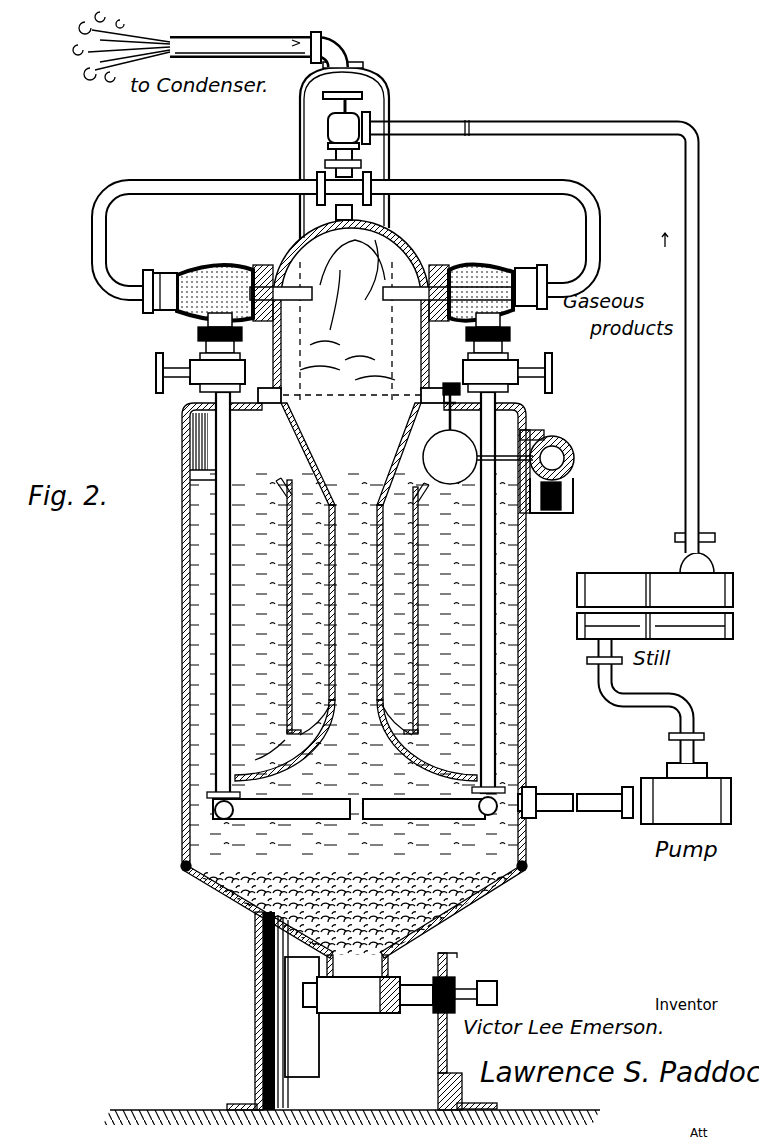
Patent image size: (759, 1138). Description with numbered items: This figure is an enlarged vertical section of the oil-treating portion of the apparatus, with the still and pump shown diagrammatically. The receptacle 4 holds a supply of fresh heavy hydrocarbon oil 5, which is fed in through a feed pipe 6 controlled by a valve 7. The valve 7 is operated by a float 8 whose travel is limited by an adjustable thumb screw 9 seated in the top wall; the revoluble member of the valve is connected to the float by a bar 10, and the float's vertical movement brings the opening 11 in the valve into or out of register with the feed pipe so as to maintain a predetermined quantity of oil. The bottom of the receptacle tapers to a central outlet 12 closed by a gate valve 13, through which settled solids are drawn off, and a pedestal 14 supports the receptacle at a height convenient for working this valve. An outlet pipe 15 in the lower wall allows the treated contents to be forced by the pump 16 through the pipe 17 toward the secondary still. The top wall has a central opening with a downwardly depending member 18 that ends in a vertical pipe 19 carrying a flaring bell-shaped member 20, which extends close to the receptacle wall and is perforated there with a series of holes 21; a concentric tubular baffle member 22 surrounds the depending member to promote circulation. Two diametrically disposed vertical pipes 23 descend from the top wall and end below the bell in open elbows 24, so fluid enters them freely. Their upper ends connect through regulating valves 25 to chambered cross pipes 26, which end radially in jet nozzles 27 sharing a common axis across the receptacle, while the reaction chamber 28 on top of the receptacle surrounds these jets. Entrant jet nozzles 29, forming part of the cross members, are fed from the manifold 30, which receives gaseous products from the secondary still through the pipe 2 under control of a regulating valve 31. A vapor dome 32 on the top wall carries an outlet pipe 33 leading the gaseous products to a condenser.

The pipe 2 is at (437, 124).
The receptacle 4 is at (182, 560).
The heavy hydrocarbon oil 5 is at (526, 645).
The feed pipe 6 is at (574, 495).
The valve 7 is at (575, 455).
The float 8 is at (472, 444).
The adjustable thumb screw 9 is at (450, 382).
The bar 10 is at (535, 437).
The opening 11 is at (532, 513).
The central outlet 12 is at (390, 962).
The gate valve 13 is at (450, 982).
The pedestal 14 is at (257, 985).
The outlet pipe 15 is at (557, 815).
The pump 16 is at (648, 825).
The pipe 17 is at (700, 705).
The downwardly depending member 18 is at (297, 425).
The vertical pipe 19 is at (356, 602).
The bell-shaped member 20 is at (296, 740).
The holes 21 is at (480, 765).
The tubular baffle member 22 is at (352, 606).
The vertical pipes 23 is at (216, 398).
The elbows 24 is at (205, 790).
The regulating valves 25 is at (190, 365).
The chambered cross pipes 26 is at (165, 280).
The jet nozzles 27 is at (272, 268).
The reaction chamber 28 is at (393, 228).
The entrant jet nozzles 29 is at (208, 290).
The manifold 30 is at (243, 180).
The regulating valve 31 is at (328, 132).
The vapor dome 32 is at (368, 92).
The outlet pipe 33 is at (262, 40).